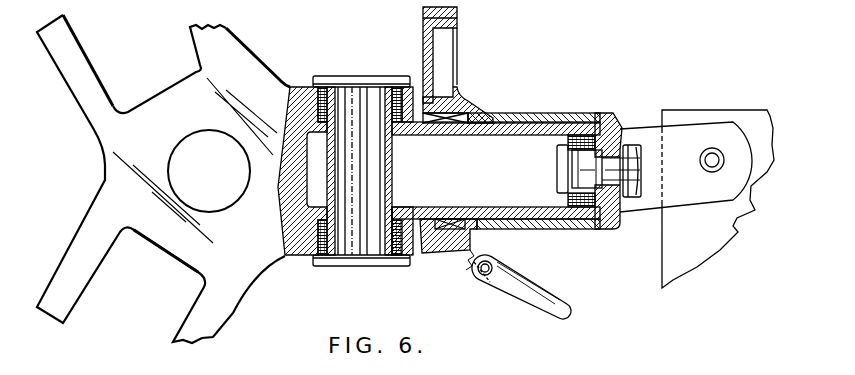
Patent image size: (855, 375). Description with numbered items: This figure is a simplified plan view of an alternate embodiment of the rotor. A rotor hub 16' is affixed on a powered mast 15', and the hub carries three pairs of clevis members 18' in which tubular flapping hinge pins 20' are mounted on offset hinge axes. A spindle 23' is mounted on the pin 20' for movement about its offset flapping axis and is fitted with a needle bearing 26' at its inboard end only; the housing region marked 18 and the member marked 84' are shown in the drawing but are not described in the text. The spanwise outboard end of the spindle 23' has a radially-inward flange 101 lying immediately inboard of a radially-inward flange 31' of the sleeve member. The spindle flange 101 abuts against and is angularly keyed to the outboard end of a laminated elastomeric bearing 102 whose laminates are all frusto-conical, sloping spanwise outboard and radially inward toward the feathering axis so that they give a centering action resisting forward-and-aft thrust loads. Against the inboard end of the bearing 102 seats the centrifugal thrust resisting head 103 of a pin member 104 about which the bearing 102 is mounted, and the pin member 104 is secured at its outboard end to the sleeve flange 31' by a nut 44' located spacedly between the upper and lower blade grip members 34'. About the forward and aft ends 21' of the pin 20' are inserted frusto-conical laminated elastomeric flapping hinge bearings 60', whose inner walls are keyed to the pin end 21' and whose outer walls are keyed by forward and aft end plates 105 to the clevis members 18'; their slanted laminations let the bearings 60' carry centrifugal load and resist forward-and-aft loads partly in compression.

The powered mast 15' is at (209, 171).
The rotor hub 16' is at (201, 90).
The clevis members 18' is at (161, 179).
The housing 18 is at (345, 153).
The tubular flapping hinge pin 20' is at (359, 171).
The pin ends 21' is at (359, 171).
The spindle 23' is at (496, 170).
The needle bearing 26' is at (511, 158).
The radially-inward flange of the sleeve member 31' is at (682, 167).
The blade grip members 34' is at (718, 189).
The nut 44' is at (655, 171).
The frusto-conical laminated elastomeric flapping hinge bearing 60' is at (357, 172).
The bracket 84' is at (458, 130).
The radially-inward flange of the spindle 101 is at (600, 133).
The laminated elastomeric bearing 102 is at (583, 133).
The centrifugal thrust resisting head 103 is at (558, 168).
The pin member 104 is at (582, 160).
The end plates 105 is at (342, 76).